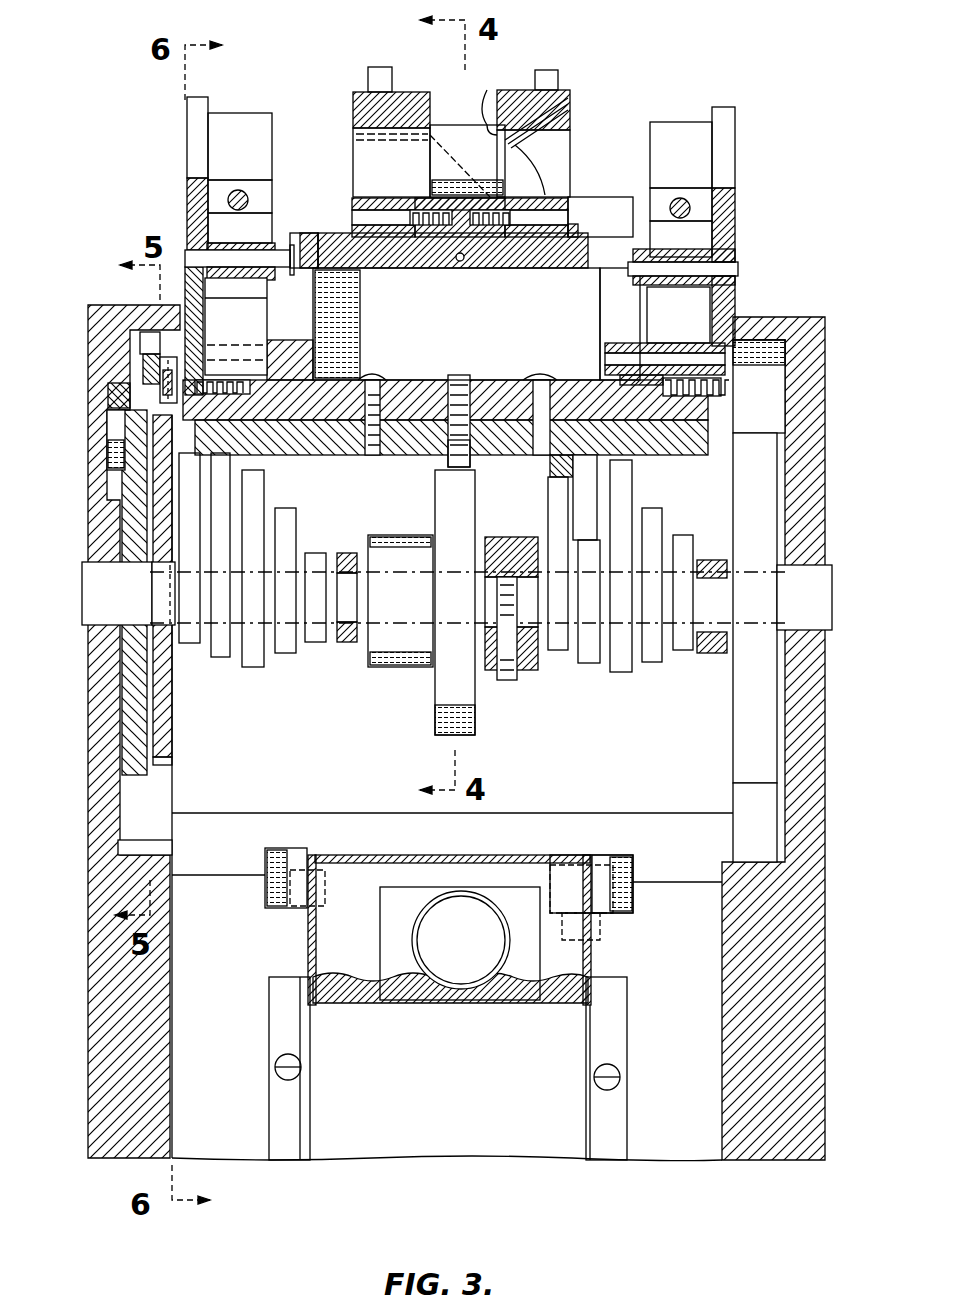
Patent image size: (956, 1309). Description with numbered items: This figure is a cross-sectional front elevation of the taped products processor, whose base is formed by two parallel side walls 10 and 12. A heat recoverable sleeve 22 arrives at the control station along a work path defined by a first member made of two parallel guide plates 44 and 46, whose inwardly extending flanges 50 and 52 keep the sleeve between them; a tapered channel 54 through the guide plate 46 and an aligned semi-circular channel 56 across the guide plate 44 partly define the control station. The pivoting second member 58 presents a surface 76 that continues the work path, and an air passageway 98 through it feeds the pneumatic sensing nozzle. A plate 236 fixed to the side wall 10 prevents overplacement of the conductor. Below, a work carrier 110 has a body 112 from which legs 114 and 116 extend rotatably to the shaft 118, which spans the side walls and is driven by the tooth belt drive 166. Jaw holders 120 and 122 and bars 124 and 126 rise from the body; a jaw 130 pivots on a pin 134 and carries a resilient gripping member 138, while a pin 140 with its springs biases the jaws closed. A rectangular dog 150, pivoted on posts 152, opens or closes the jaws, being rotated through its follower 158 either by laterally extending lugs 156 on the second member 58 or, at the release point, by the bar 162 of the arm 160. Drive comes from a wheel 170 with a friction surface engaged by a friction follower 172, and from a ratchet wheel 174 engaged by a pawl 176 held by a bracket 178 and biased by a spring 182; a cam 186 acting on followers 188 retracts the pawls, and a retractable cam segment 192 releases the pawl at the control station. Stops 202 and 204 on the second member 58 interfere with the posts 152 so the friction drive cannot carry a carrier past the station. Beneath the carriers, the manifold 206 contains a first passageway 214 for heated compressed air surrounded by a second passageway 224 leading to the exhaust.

The side wall 10 is at (92, 823).
The side wall 12 is at (818, 700).
The heat recoverable sleeve 22 is at (433, 128).
The guide plate 44 is at (368, 104).
The guide plate 46 is at (512, 88).
The flange 50 is at (460, 166).
The flange 52 is at (486, 120).
The tapered channel 54 is at (572, 132).
The semi-circular channel 56 is at (366, 164).
The second member 58 is at (548, 268).
The surface 76 is at (470, 198).
The air passageway 98 is at (461, 262).
The work carrier 110 is at (345, 370).
The body 112 is at (447, 375).
The leg 114 is at (285, 645).
The leg 116 is at (712, 476).
The shaft 118 is at (480, 580).
The jaw holder 120 is at (190, 215).
The jaw holder 122 is at (740, 206).
The bar 124 is at (320, 352).
The bar 126 is at (605, 350).
The jaw 130 is at (262, 185).
The pin 134 is at (228, 345).
The resilient gripping member 138 is at (248, 113).
The pin 140 is at (680, 206).
The rectangular dog 150 is at (680, 250).
The post 152 is at (738, 269).
The laterally extending lug 156 is at (627, 208).
The follower 158 is at (638, 300).
The arm 160 is at (600, 905).
The bar 162 is at (625, 876).
The tooth belt drive 166 is at (735, 755).
The wheel 170 is at (435, 730).
The friction follower 172 is at (446, 468).
The ratchet wheel 174 is at (167, 752).
The pawl 176 is at (110, 398).
The bracket 178 is at (140, 358).
The spring 182 is at (158, 367).
The cam 186 is at (147, 775).
The follower 188 is at (160, 390).
The retractable cam segment 192 is at (107, 418).
The stop 202 is at (318, 260).
The stop 204 is at (598, 290).
The manifold 206 is at (497, 855).
The first passageway 214 is at (462, 960).
The second passageway 224 is at (353, 960).
The plate 236 is at (354, 138).